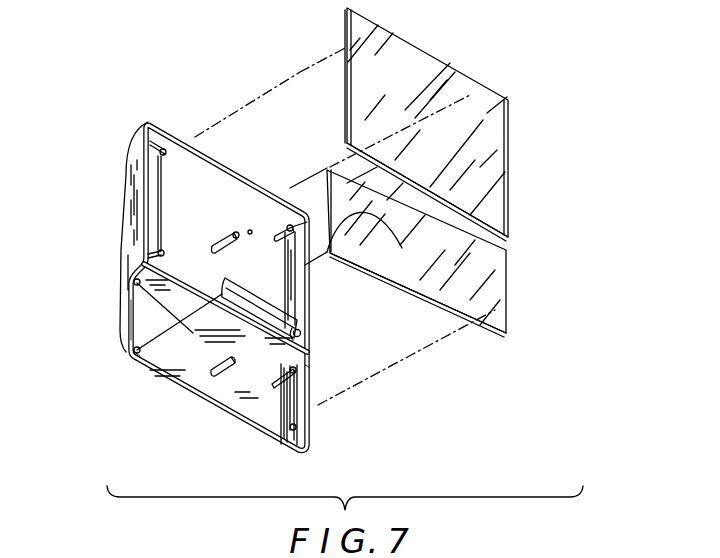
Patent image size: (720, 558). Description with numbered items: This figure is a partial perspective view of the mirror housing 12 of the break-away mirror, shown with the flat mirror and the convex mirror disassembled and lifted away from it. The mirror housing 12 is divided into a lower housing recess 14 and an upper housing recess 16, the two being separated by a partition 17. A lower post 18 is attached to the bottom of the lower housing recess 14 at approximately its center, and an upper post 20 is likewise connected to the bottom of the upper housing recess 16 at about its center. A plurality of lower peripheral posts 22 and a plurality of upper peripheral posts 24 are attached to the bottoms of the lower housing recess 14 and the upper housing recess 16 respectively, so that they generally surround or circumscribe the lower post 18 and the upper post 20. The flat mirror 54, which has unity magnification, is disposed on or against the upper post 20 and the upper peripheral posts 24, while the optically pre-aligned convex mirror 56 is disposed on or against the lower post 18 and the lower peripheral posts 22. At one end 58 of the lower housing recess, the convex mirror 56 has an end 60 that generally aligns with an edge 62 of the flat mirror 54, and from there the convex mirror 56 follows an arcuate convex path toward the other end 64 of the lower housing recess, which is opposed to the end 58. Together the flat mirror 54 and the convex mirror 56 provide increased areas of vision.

The mirror housing 12 is at (95, 245).
The lower housing recess 14 is at (295, 402).
The upper housing recess 16 is at (301, 334).
The partition 17 is at (130, 362).
The lower post 18 is at (214, 376).
The upper post 20 is at (223, 236).
The lower peripheral posts 22 is at (133, 284).
The upper peripheral posts 24 is at (288, 226).
The flat mirror 54 is at (414, 126).
The convex mirror 56 is at (327, 254).
The end of the lower housing recess 58 is at (312, 368).
The end of the convex mirror 60 is at (505, 293).
The edge of the flat mirror 62 is at (493, 175).
The other end of the lower housing recess 64 is at (128, 345).